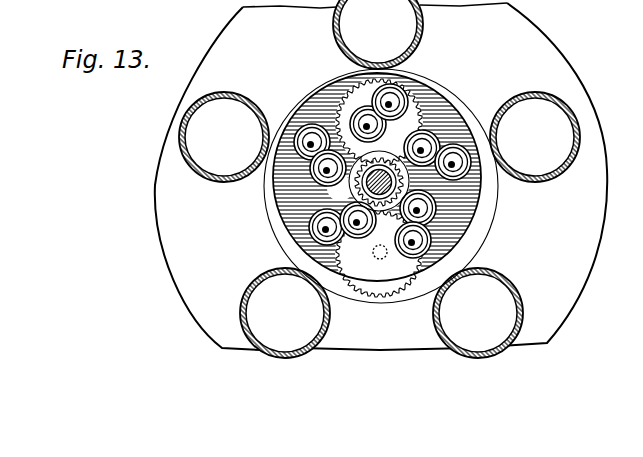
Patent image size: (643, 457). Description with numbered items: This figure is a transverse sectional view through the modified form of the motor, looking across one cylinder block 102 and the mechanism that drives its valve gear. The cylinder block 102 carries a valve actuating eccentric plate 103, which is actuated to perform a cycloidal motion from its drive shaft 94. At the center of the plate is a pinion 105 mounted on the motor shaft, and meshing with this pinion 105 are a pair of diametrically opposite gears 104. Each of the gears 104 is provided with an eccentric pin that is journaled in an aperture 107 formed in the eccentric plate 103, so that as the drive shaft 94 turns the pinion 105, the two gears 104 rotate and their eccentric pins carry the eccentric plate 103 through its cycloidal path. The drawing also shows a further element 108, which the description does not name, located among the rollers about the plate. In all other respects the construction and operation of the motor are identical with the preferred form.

The drive shaft section 94 is at (382, 200).
The cylinder block 102 is at (601, 188).
The valve actuating eccentric plate 103 is at (471, 201).
The gears 104 is at (418, 95).
The pinion 105 is at (353, 171).
The apertures 107 is at (384, 254).
The roller bushing 108 is at (362, 234).